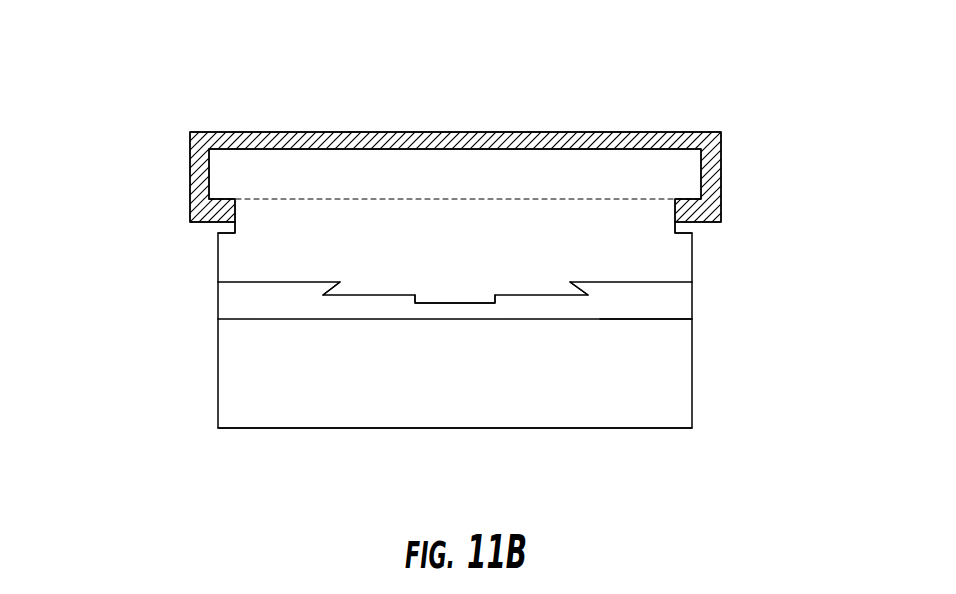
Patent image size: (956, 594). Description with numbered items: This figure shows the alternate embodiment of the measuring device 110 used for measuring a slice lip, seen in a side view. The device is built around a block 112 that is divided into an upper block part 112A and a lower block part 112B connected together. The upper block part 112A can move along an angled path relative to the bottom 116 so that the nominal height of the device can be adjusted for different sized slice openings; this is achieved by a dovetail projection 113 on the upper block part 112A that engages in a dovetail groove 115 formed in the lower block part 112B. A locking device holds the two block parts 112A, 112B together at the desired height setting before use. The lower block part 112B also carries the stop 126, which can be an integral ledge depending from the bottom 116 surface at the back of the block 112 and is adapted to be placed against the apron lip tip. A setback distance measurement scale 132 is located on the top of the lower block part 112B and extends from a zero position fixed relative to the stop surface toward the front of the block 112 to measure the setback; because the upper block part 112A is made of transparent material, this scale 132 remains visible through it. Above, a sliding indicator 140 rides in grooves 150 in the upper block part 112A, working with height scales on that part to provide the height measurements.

The measuring device 110 is at (222, 103).
The block 112 is at (211, 306).
The upper block part 112A is at (605, 165).
The lower block part 112B is at (687, 292).
The dovetail projection 113 is at (365, 287).
The dovetail groove 115 is at (532, 292).
The bottom 116 is at (653, 322).
The stop 126 is at (668, 428).
The setback distance measurement scale 132 is at (453, 305).
The sliding indicator 140 is at (727, 178).
The grooves 150 is at (216, 226).